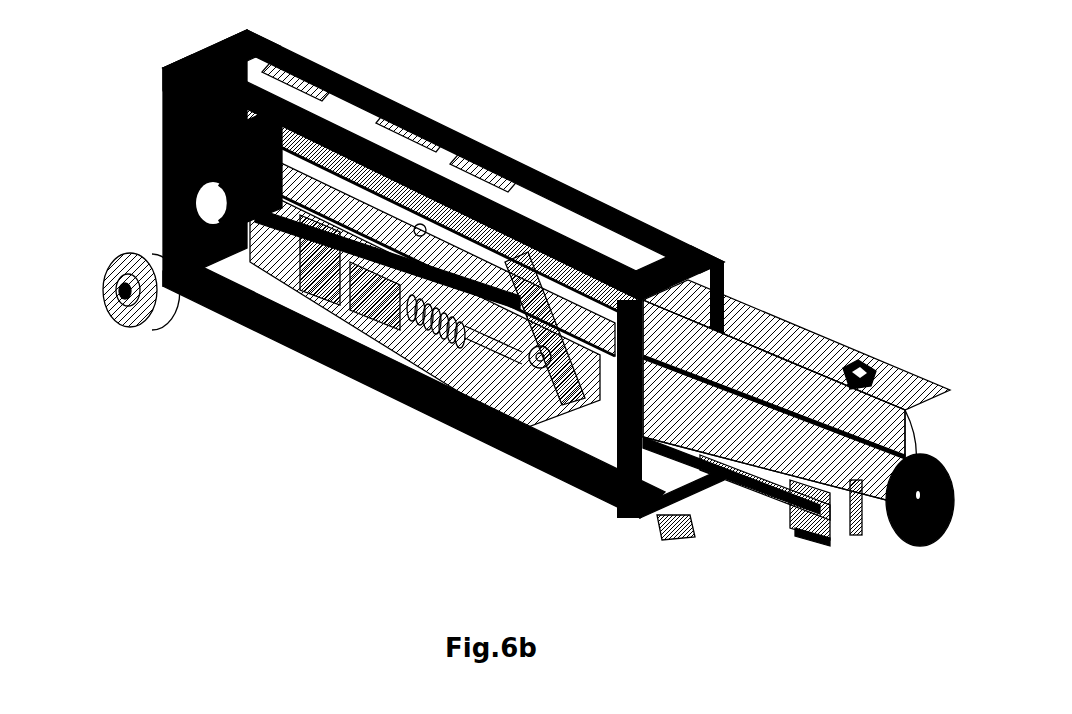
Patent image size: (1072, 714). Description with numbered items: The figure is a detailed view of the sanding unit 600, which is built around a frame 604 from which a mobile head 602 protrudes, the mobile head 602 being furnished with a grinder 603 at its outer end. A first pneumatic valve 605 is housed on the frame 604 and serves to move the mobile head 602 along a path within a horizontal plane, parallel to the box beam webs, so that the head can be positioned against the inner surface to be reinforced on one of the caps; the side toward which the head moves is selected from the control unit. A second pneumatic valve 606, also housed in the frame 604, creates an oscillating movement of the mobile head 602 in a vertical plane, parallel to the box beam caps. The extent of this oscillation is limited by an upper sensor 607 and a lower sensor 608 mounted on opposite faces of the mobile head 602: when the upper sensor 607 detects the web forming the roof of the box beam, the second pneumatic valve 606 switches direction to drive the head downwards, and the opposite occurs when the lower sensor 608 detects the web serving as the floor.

The sanding unit 600 is at (574, 333).
The mobile head 602 is at (775, 350).
The grinder 603 is at (943, 452).
The frame 604 is at (437, 413).
The first pneumatic valve 605 is at (413, 260).
The second pneumatic valve 606 is at (443, 285).
The upper sensor 607 is at (863, 365).
The lower sensor 608 is at (803, 542).